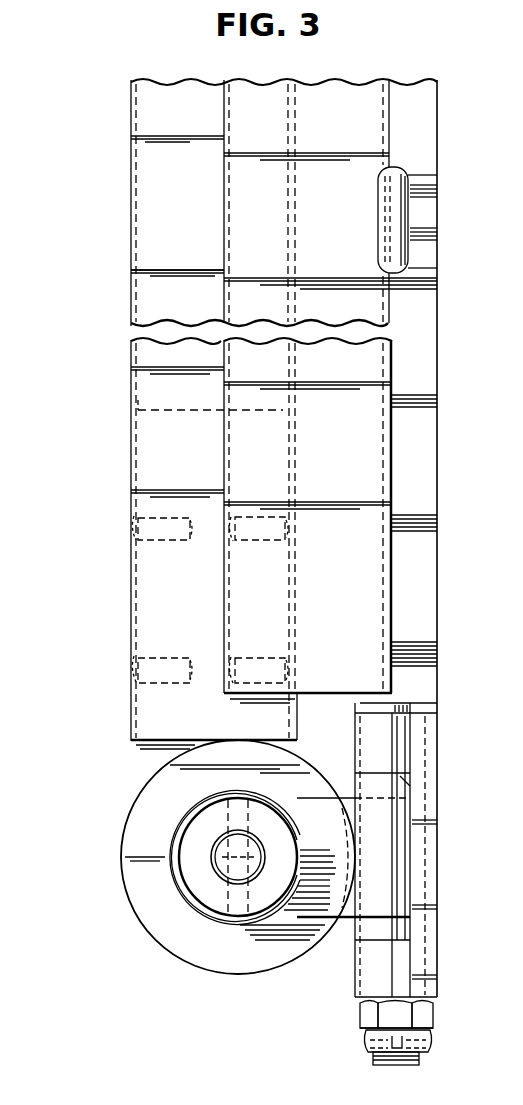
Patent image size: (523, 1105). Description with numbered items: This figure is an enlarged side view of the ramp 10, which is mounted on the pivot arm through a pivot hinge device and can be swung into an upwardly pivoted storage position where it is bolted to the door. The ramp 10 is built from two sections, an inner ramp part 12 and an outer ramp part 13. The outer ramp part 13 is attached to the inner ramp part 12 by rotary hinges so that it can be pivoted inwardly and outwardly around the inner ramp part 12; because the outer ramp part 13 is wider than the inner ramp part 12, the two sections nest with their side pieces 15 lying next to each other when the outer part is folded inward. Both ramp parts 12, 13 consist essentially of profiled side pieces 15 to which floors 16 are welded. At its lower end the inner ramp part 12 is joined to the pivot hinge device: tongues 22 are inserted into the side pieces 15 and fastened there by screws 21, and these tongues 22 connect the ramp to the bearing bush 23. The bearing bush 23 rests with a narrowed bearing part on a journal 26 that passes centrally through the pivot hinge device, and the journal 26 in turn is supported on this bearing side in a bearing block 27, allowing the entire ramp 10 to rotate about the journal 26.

The ramp 10 is at (122, 180).
The inner ramp part 12 is at (157, 594).
The outer ramp part 13 is at (362, 462).
The profiled side pieces 15 is at (197, 630).
The floors 16 is at (224, 302).
The screws 21 is at (248, 683).
The tongues 22 is at (158, 410).
The bearing bush 23 is at (156, 962).
The journal 26 is at (222, 880).
The bearing block 27 is at (341, 920).